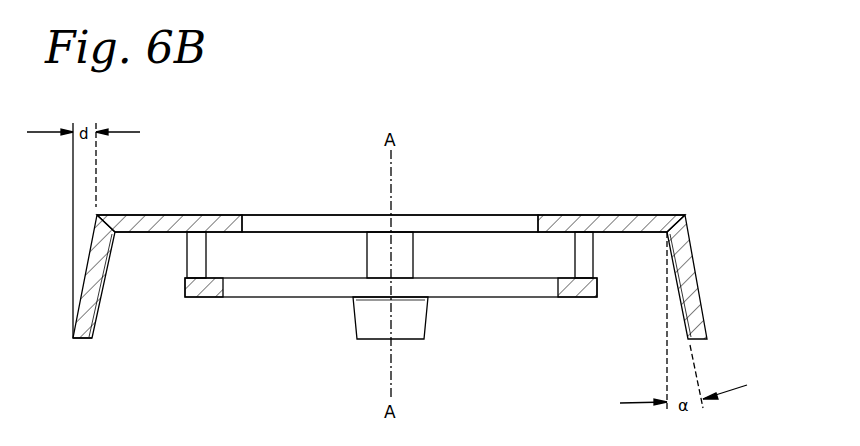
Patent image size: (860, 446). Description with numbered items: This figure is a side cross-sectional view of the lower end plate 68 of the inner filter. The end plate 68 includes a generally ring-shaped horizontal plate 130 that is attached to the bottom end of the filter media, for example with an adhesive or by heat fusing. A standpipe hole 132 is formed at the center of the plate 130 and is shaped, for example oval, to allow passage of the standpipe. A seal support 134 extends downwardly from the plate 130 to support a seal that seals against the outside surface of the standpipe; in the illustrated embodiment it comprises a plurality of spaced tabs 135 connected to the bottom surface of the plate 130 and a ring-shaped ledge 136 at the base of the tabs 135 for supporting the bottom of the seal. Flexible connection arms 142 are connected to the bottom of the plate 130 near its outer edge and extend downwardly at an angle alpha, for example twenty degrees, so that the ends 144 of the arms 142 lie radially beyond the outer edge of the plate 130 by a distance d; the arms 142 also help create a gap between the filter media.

The lower end plate 68 is at (591, 176).
The horizontal plate 130 is at (150, 219).
The standpipe hole 132 is at (343, 220).
The seal support 134 is at (196, 315).
The tabs 135 is at (190, 263).
The ring-shaped ledge 136 is at (212, 292).
The flexible connection arms 142 is at (92, 282).
The ends of the arms 144 is at (80, 340).